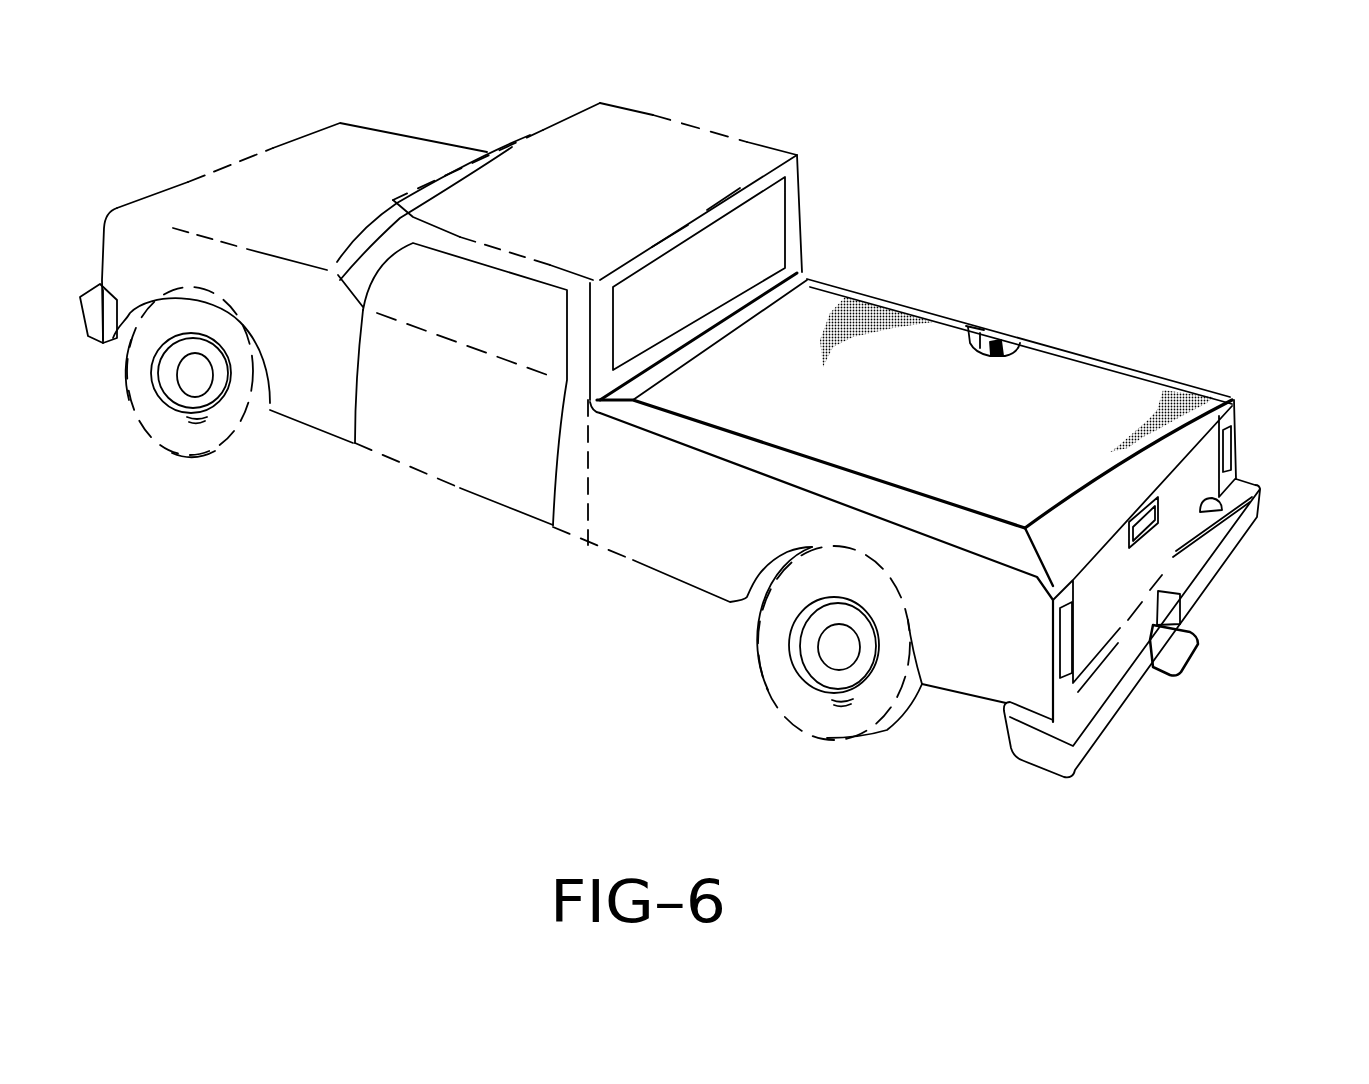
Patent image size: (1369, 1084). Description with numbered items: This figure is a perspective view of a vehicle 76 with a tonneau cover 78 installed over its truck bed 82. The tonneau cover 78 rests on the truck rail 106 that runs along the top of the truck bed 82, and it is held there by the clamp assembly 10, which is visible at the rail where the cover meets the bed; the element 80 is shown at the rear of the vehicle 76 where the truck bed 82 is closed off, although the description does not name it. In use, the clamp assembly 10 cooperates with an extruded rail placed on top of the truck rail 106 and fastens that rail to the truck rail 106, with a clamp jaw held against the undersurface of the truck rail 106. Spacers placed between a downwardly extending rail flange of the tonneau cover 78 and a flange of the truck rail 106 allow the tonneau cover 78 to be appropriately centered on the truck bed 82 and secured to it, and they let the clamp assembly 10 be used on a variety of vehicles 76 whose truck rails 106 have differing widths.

The clamp assembly 10 is at (998, 348).
The vehicle 76 is at (905, 160).
The tonneau cover 78 is at (1072, 373).
The tailgate 80 is at (1205, 465).
The truck bed 82 is at (713, 517).
The truck rail 106 is at (980, 330).